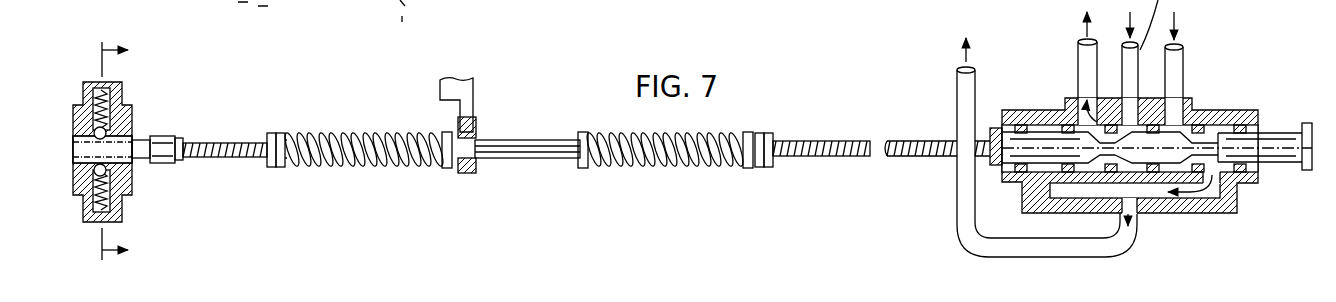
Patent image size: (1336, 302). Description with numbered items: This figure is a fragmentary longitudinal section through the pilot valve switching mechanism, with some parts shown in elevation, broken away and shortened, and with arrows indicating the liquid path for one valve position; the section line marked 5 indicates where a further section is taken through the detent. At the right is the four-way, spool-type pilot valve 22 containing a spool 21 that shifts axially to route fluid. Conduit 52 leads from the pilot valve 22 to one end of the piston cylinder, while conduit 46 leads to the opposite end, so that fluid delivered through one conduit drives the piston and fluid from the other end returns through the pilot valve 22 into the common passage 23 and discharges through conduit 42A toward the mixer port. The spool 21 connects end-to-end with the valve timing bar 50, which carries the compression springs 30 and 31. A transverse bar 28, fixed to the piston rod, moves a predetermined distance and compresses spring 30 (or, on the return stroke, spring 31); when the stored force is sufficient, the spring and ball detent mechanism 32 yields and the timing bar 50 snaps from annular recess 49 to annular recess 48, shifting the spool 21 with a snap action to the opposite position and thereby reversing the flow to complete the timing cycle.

The section line 5- 5 is at (128, 152).
The spring and ball detent mechanism 32 is at (137, 103).
The annular recess 48 is at (141, 140).
The annular recess 49 is at (128, 162).
The spring 30 is at (318, 165).
The transverse bar 28 is at (470, 90).
The valve timing bar 50 is at (510, 150).
The spring 31 is at (658, 165).
The conduit 42A is at (971, 92).
The conduit 52 is at (1080, 50).
The conduit 46 is at (1185, 62).
The four-way spool-type pilot valve 22 is at (1204, 104).
The spool 21 is at (1263, 140).
The common passage 23 is at (1108, 190).